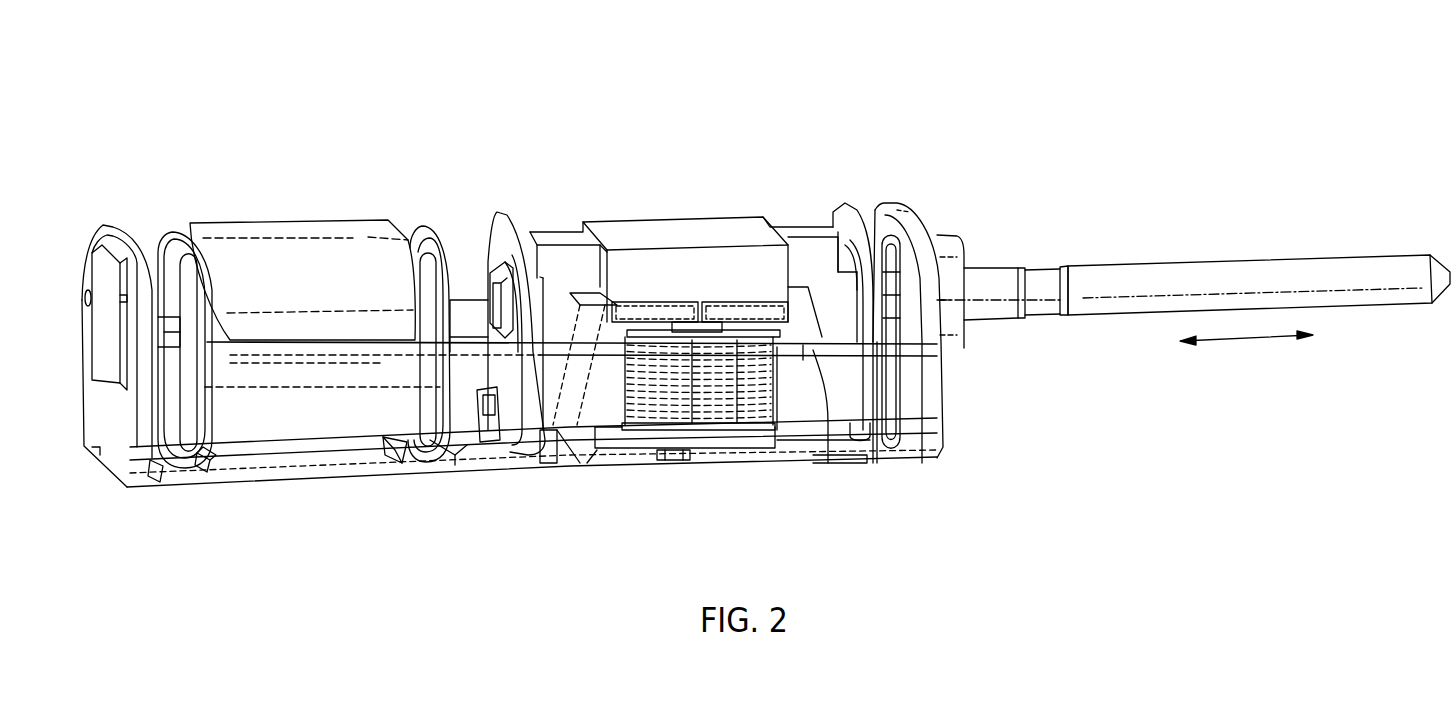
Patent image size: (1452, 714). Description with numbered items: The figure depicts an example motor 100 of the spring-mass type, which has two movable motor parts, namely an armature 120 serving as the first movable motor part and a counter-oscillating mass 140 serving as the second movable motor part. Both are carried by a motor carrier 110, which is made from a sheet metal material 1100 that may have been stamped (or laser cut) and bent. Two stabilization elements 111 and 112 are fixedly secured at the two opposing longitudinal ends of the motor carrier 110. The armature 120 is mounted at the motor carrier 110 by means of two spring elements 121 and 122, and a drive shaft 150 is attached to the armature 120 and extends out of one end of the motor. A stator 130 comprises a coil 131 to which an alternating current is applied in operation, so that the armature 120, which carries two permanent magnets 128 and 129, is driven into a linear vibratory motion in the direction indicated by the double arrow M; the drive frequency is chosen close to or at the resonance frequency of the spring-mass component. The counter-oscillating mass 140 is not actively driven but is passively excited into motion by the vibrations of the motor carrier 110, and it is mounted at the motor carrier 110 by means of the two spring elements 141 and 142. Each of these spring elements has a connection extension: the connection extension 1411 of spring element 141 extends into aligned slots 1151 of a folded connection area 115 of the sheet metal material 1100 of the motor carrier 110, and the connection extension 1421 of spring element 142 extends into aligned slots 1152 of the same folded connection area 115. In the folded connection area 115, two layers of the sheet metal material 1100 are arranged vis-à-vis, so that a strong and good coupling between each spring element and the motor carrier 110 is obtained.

The motor 100 is at (580, 98).
The motor carrier 110 is at (905, 470).
The stabilization element 111 is at (122, 240).
The stabilization element 112 is at (903, 212).
The folded connection area 115 is at (317, 372).
The aligned slots 1151 is at (153, 442).
The aligned slots 1152 is at (400, 358).
The armature 120 is at (687, 232).
The spring element 121 is at (500, 235).
The spring element 122 is at (842, 220).
The permanent magnet 128 is at (648, 313).
The permanent magnet 129 is at (733, 310).
The stator 130 is at (673, 440).
The coil 131 is at (707, 434).
The counter-oscillating mass 140 is at (270, 230).
The spring element 141 is at (168, 247).
The connection extension 1411 is at (207, 395).
The spring element 142 is at (415, 237).
The connection extension 1421 is at (430, 440).
The drive shaft 150 is at (1250, 280).
The sheet metal material 1100 is at (870, 378).
The double arrow M is at (1247, 338).